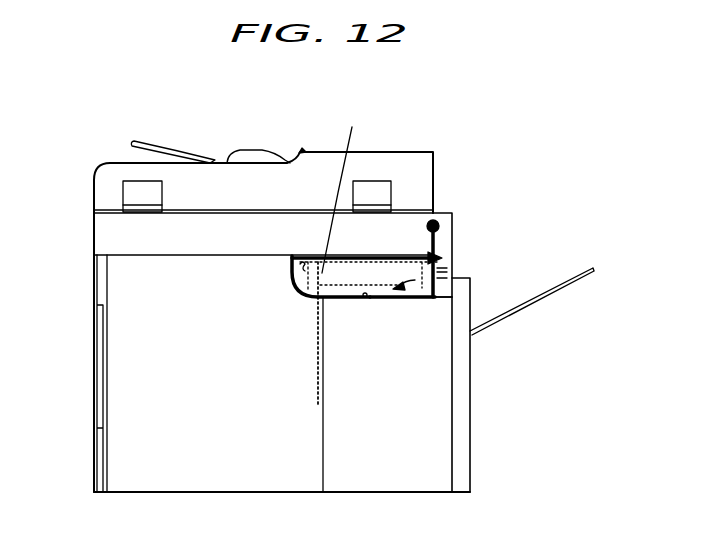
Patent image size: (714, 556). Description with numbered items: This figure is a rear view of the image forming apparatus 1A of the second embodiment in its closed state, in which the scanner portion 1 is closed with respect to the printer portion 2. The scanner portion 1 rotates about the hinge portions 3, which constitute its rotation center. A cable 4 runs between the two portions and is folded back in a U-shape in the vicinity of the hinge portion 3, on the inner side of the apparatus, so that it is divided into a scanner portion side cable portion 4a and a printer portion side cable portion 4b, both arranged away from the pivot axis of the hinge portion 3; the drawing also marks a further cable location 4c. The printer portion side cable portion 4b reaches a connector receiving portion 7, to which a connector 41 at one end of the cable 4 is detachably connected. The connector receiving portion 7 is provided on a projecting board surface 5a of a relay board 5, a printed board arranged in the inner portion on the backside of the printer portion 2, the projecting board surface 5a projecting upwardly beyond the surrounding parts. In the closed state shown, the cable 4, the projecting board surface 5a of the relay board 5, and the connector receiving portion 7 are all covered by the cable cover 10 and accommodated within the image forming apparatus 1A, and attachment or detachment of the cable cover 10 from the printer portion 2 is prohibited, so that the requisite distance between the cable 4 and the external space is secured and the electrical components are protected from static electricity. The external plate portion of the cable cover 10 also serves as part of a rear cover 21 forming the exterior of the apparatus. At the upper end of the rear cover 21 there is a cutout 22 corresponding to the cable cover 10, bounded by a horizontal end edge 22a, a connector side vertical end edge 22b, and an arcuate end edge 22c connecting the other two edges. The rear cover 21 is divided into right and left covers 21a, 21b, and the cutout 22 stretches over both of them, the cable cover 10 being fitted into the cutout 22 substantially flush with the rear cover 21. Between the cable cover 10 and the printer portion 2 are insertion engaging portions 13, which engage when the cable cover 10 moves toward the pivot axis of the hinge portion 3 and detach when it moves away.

The image forming apparatus 1A is at (478, 119).
The scanner portion 1 is at (291, 141).
The printer portion 2 is at (83, 294).
The hinge portion 3 is at (439, 226).
The cable 4 is at (448, 260).
The scanner portion side cable portion 4a is at (403, 257).
The printer portion side cable portion 4b is at (383, 297).
The reading unit side portion 4c is at (448, 270).
The relay board 5 is at (318, 383).
The projecting board surface 5a is at (344, 189).
The connector receiving portion 7 is at (338, 268).
The cable cover 10 is at (452, 298).
The insertion engaging portions 13 is at (437, 268).
The rear cover 21 is at (257, 445).
The right cover 21a is at (145, 482).
The left cover 21b is at (353, 482).
The cutout 22 is at (417, 292).
The horizontal end edge 22a is at (368, 297).
The connector side vertical end edge 22b is at (292, 272).
The arcuate end edge 22c is at (300, 293).
The connector 41 is at (362, 265).